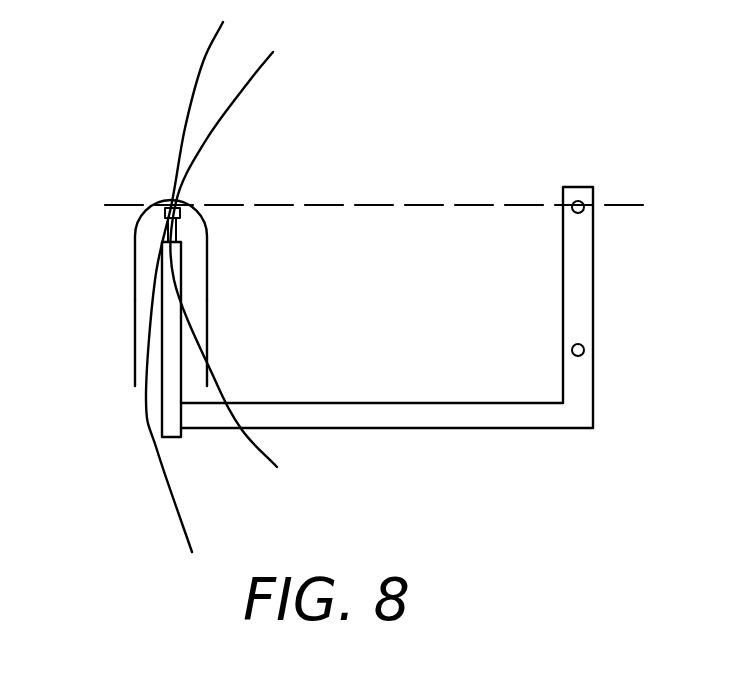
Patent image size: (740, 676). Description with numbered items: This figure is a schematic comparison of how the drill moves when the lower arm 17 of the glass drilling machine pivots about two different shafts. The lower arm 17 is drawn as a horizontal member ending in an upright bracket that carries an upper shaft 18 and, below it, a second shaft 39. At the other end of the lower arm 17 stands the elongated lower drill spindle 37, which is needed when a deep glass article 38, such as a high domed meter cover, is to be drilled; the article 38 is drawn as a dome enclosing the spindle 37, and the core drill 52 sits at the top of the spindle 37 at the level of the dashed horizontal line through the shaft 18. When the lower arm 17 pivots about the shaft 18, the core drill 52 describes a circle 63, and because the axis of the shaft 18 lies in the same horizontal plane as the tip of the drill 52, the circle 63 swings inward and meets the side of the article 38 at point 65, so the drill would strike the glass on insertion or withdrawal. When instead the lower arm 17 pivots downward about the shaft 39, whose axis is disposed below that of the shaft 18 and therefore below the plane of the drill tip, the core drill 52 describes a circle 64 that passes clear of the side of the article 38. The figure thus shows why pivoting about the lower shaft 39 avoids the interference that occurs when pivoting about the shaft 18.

The lower arm 17 is at (458, 428).
The shaft 18 is at (583, 203).
The elongated lower drill spindle 37 is at (163, 358).
The glass article 38 is at (208, 252).
The shaft 39 is at (583, 348).
The core drill 52 is at (164, 212).
The circle 63 is at (273, 462).
The circle 64 is at (173, 512).
The point 65 is at (208, 372).